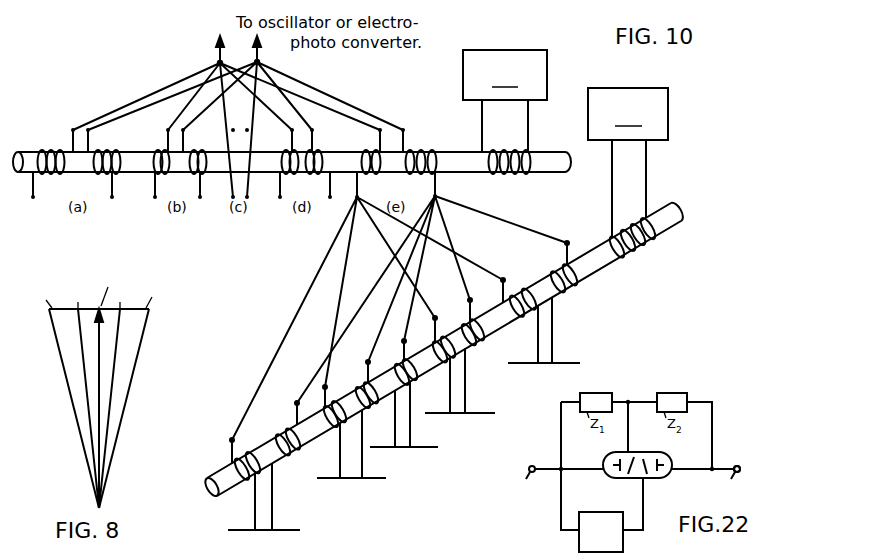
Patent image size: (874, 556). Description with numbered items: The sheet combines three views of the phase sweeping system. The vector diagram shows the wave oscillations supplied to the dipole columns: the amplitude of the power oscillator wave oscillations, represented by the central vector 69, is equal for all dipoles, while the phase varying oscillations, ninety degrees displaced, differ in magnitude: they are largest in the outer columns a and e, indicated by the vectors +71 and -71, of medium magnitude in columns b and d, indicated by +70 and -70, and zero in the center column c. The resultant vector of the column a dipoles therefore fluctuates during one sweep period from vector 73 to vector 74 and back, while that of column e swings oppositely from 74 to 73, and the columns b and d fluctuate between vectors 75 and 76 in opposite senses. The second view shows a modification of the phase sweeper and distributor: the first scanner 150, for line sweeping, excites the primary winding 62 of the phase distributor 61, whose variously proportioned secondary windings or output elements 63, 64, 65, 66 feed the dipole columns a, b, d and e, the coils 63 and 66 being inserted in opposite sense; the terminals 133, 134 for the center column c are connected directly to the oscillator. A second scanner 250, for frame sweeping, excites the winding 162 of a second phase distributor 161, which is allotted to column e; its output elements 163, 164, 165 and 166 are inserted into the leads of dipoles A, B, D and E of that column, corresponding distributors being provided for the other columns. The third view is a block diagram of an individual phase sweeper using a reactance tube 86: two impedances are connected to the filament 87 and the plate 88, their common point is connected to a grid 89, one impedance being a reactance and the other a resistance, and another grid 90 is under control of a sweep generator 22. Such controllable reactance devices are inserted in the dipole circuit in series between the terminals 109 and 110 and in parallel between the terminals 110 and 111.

In FIG. 10, the phase distributor 61 is at (541, 158).
In FIG. 10, the primary winding 62 is at (513, 171).
In FIG. 10, the secondary winding 63 is at (108, 150).
In FIG. 10, the secondary winding 64 is at (185, 152).
In FIG. 10, the secondary winding 65 is at (314, 150).
In FIG. 10, the secondary winding 66 is at (420, 147).
In FIG. 10, the terminal 133 is at (218, 63).
In FIG. 10, the terminal 134 is at (259, 63).
In FIG. 10, the first scanner 150 is at (505, 101).
In FIG. 10, the second scanner 250 is at (628, 163).
In FIG. 10, the second phase distributor 161 is at (589, 263).
In FIG. 10, the winding 162 is at (633, 249).
In FIG. 10, the output element 163 is at (246, 455).
In FIG. 10, the output element 164 is at (331, 402).
In FIG. 10, the output element 165 is at (441, 338).
In FIG. 10, the output element 166 is at (560, 272).
In FIG. 8, the wave oscillation amplitude vector 69 is at (101, 371).
In FIG. 8, the medium phase varying vector 70 is at (101, 297).
In FIG. 8, the large phase varying vector 71 is at (98, 294).
In FIG. 8, the resultant oscillation vector 73 is at (72, 395).
In FIG. 8, the resultant oscillation vector 74 is at (128, 395).
In FIG. 8, the resultant oscillation vector 75 is at (88, 421).
In FIG. 8, the resultant oscillation vector 76 is at (110, 427).
In FIG. 22, the reactance tube 86 is at (637, 454).
In FIG. 22, the filament 87 is at (611, 464).
In FIG. 22, the plate 88 is at (665, 463).
In FIG. 22, the grid 89 is at (625, 472).
In FIG. 22, the second grid 90 is at (645, 475).
In FIG. 22, the sweep generator 22 is at (610, 543).
In FIG. 22, the terminal 109 is at (731, 480).
In FIG. 22, the terminal 110 is at (562, 481).
In FIG. 22, the terminal 111 is at (737, 469).